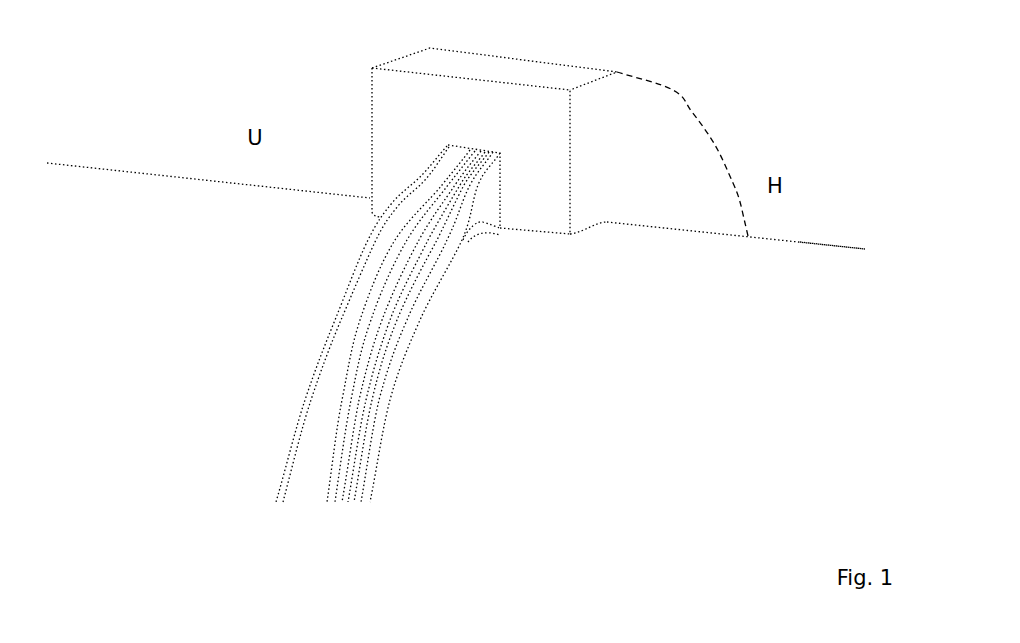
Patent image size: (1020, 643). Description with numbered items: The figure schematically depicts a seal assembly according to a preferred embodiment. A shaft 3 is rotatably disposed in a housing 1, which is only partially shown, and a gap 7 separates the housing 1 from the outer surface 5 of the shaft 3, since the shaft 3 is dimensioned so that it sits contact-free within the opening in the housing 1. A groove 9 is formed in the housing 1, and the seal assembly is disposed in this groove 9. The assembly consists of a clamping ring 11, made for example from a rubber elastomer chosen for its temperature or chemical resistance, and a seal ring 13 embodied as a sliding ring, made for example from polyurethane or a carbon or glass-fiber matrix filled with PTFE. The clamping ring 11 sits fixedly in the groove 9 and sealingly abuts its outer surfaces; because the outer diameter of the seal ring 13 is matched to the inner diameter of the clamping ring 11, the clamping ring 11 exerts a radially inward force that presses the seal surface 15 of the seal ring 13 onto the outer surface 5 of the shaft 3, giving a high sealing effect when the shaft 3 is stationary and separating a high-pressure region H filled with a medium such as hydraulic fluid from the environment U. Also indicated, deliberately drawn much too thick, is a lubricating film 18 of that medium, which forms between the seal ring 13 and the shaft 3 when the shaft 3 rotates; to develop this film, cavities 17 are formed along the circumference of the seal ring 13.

The housing 1 is at (383, 99).
The shaft 3 is at (767, 248).
The outer surface 5 is at (840, 246).
The gap 7 is at (609, 222).
The groove 9 is at (502, 152).
The clamping ring 11 is at (388, 248).
The seal ring 13 is at (445, 268).
The seal surface 15 is at (432, 315).
The cavities 17 is at (481, 244).
The lubricating film 18 is at (385, 422).